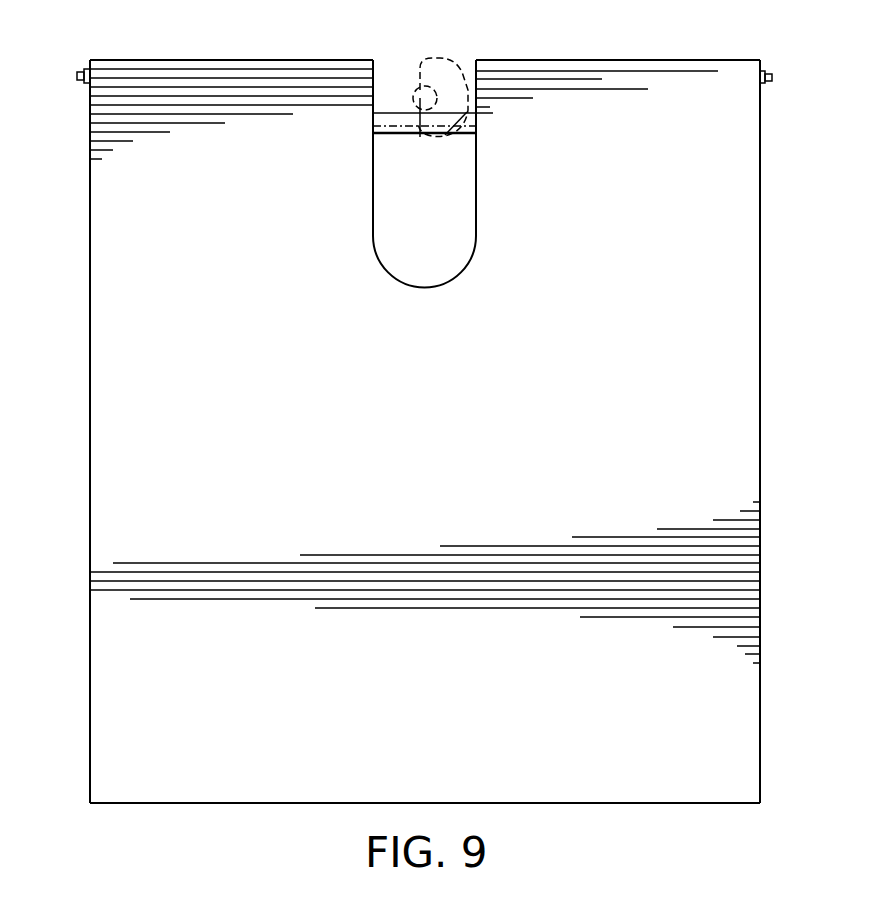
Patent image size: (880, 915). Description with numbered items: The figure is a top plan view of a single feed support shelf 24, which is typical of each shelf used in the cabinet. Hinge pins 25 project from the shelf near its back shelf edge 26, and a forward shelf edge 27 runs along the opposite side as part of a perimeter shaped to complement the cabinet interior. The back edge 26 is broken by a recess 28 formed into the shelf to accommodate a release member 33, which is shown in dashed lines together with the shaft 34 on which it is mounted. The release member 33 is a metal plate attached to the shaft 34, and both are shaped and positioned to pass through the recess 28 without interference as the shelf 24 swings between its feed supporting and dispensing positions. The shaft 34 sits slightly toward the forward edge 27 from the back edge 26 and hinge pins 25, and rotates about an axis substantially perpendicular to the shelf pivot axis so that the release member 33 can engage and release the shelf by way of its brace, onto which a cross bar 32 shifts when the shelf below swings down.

The feed support shelf 24 is at (73, 457).
The hinge pins 25 is at (77, 76).
The back shelf edge 26 is at (570, 60).
The forward shelf edge 27 is at (254, 803).
The recess 28 is at (433, 243).
The cross bar 32 is at (402, 131).
The release member 33 is at (448, 78).
The shaft 34 is at (411, 92).